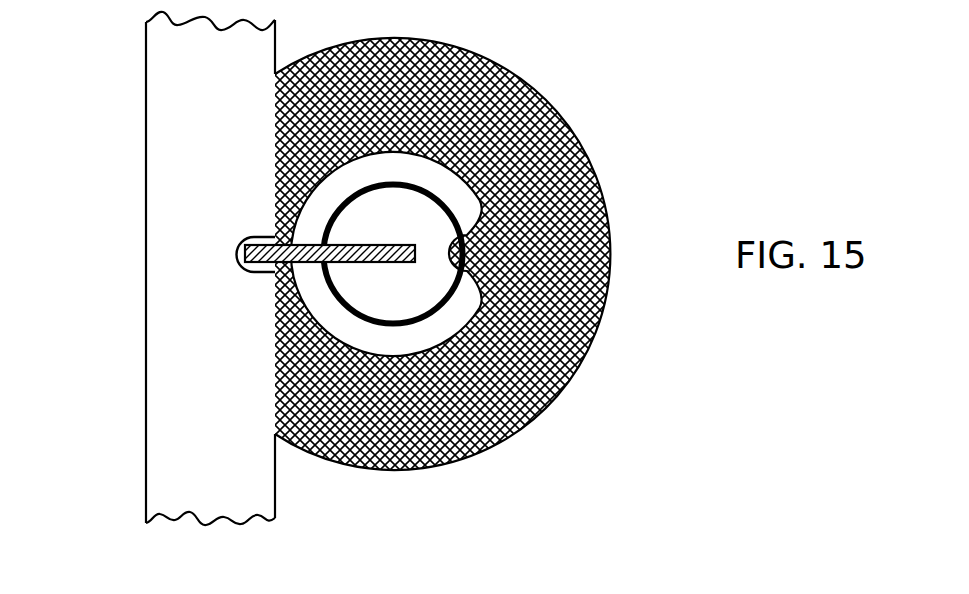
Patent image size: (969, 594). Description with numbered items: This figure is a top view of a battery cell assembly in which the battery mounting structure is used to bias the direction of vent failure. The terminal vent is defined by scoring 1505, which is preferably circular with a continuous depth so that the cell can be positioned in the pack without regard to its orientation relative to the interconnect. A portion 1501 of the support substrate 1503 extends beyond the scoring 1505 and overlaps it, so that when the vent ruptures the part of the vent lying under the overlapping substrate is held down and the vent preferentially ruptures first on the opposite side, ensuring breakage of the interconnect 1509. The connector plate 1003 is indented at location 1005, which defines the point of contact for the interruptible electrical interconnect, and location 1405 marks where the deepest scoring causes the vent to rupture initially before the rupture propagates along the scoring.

The connector plate 1003 is at (210, 490).
The indented location 1005 is at (259, 228).
The deepest scoring location 1405 is at (314, 226).
The portion of support substrate 1501 is at (482, 254).
The support substrate 1503 is at (493, 441).
The scoring 1505 is at (437, 185).
The interconnect 1509 is at (390, 261).